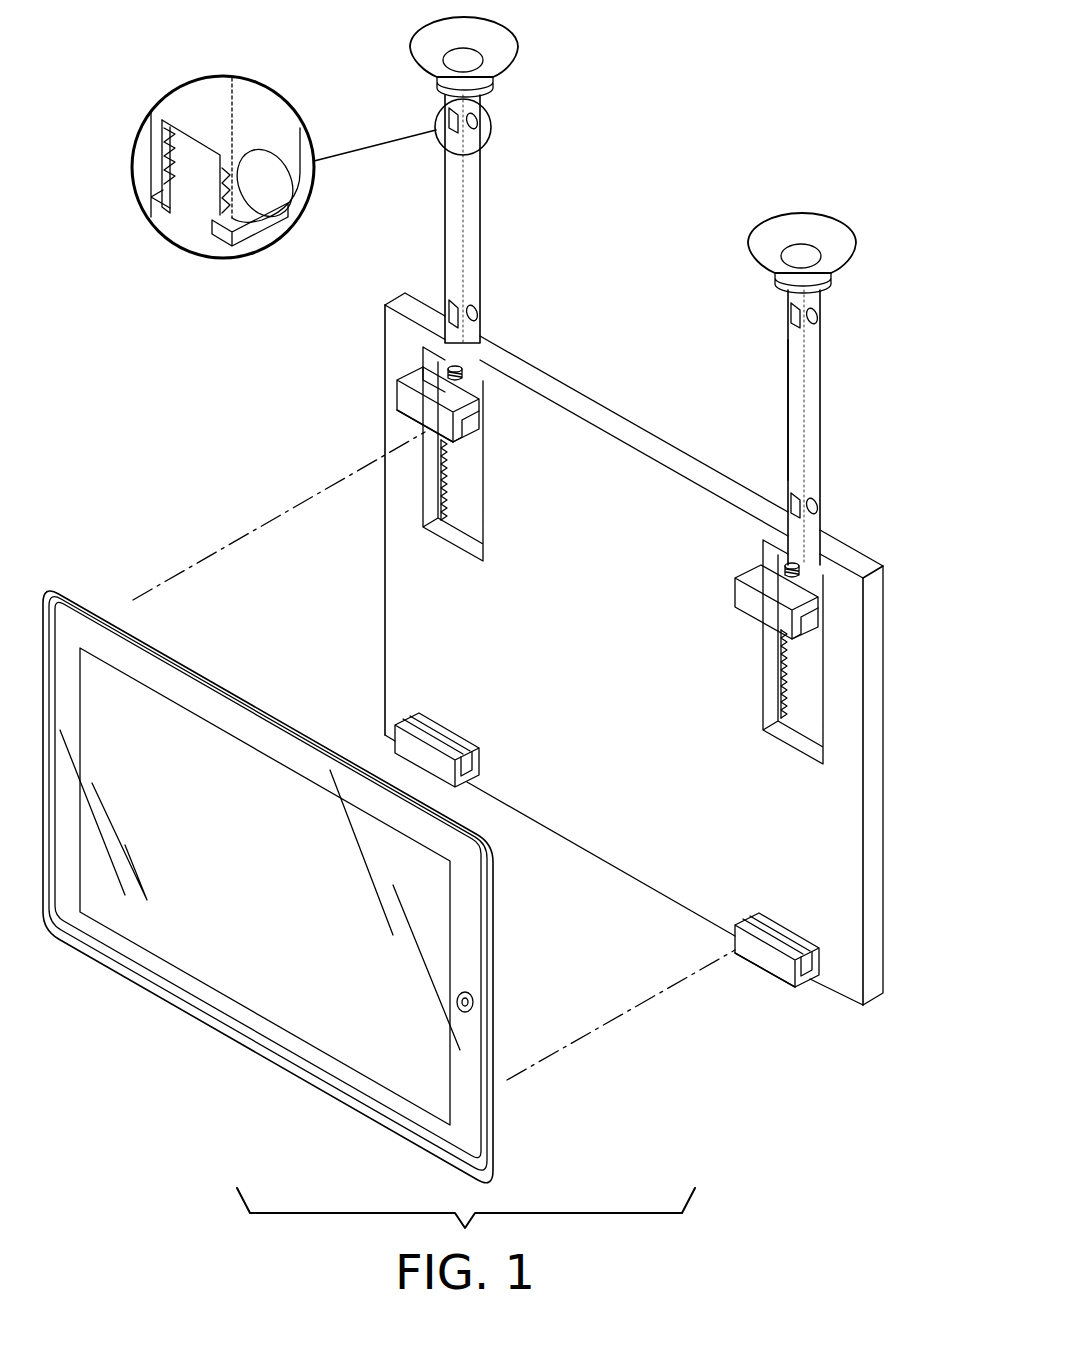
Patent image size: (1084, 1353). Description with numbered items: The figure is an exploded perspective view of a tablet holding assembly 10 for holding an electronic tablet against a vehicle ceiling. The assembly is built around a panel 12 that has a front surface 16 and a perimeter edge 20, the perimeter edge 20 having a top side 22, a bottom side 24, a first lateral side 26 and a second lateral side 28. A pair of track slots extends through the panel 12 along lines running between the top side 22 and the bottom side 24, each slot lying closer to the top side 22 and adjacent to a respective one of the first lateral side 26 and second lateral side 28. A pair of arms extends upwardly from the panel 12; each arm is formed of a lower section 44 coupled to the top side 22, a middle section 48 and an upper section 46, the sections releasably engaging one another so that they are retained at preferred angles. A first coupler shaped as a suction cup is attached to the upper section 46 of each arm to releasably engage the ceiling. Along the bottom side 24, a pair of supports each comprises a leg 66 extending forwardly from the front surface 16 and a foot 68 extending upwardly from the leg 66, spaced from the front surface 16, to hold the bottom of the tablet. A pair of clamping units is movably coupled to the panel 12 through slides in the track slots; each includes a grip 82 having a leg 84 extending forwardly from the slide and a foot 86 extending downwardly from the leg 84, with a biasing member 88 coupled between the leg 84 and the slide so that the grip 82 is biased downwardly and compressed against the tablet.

The tablet holding assembly 10 is at (909, 268).
The panel 12 is at (880, 566).
The front surface 16 is at (440, 648).
The perimeter edge 20 is at (590, 412).
The top side 22 is at (527, 370).
The bottom side 24 is at (665, 888).
The first lateral side 26 is at (385, 536).
The second lateral side 28 is at (882, 890).
The lower section 44 is at (838, 513).
The upper section 46 is at (835, 305).
The middle section 48 is at (834, 434).
The leg 66 is at (806, 978).
The foot 68 is at (757, 947).
The grip 82 is at (425, 383).
The leg 84 is at (402, 300).
The foot 86 is at (413, 405).
The biasing member 88 is at (787, 563).